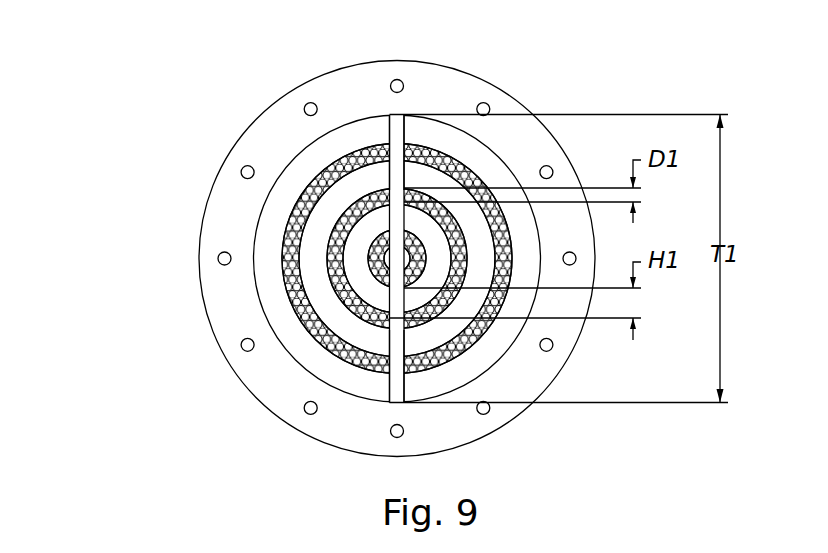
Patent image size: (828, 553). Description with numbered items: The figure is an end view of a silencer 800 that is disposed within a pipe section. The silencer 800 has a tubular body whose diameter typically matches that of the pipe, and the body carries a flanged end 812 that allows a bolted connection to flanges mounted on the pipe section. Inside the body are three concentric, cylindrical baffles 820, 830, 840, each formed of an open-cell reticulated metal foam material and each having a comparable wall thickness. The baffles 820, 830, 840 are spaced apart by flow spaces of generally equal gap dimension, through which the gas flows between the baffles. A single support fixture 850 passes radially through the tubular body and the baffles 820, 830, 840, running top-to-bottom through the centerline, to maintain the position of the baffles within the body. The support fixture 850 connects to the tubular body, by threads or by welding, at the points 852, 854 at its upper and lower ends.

The silencer 800 is at (317, 249).
The flanged end 812 is at (438, 83).
The baffle 820 is at (373, 260).
The baffle 830 is at (331, 235).
The baffle 840 is at (308, 187).
The support fixture 850 is at (393, 178).
The connection point of support fixture 852 is at (388, 114).
The connection point of support fixture 854 is at (390, 402).